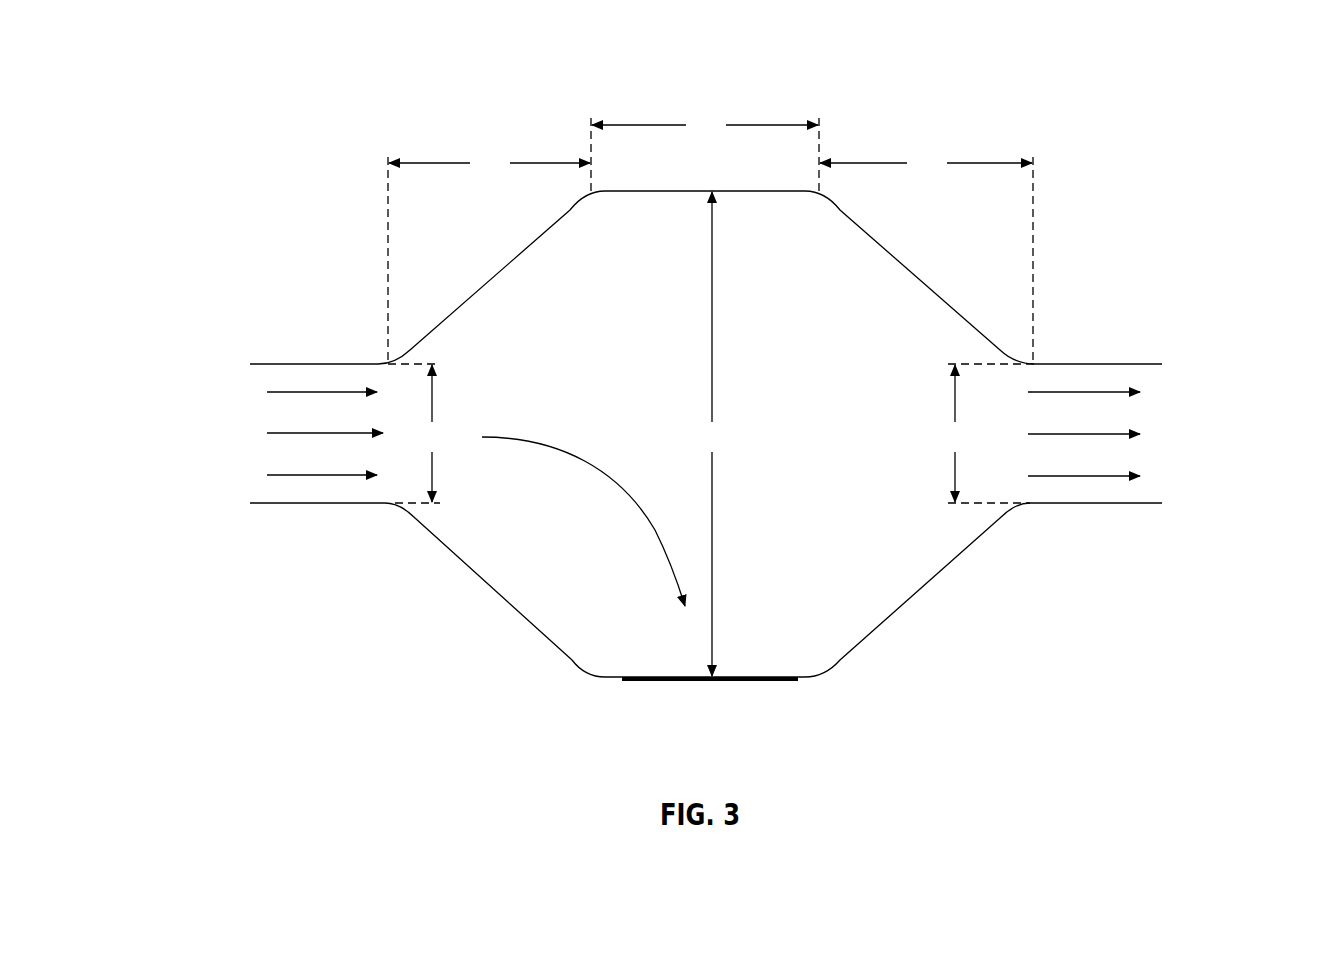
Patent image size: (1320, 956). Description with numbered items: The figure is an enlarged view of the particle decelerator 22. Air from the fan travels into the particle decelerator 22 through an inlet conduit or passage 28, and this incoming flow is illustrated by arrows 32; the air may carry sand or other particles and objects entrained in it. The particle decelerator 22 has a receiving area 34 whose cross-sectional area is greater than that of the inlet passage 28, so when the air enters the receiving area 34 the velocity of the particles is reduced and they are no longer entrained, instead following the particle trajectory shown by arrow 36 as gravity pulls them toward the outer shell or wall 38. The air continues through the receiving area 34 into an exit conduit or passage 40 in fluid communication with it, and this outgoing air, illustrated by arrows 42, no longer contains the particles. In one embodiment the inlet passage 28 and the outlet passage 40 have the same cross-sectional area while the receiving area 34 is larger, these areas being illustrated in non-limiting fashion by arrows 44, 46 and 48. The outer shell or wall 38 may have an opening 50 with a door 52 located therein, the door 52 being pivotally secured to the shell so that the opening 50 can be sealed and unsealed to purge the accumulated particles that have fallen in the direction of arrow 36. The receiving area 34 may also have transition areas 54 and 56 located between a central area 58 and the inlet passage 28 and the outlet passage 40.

The particle decelerator 22 is at (1060, 62).
The inlet conduit or passage 28 is at (292, 364).
The arrows 32 is at (280, 478).
The receiving area 34 is at (625, 298).
The arrow 36 is at (606, 472).
The outer shell or wall 38 is at (612, 678).
The exit conduit or passage 40 is at (1118, 504).
The arrows 42 is at (1113, 390).
The arrow 44 is at (417, 433).
The arrow 46 is at (712, 434).
The arrow 48 is at (988, 433).
The opening 50 is at (807, 678).
The door 52 is at (780, 678).
The transition area 54 is at (489, 241).
The transition area 56 is at (926, 256).
The central area 58 is at (705, 150).